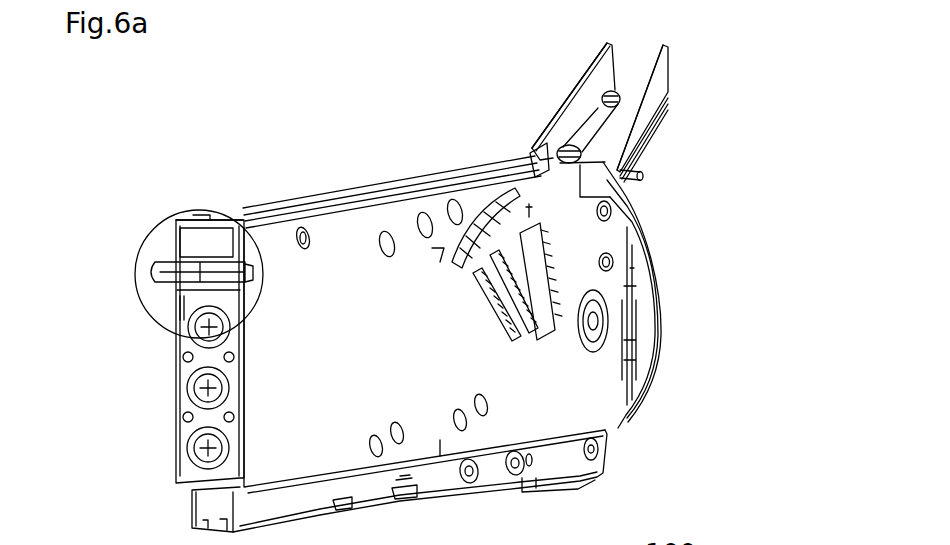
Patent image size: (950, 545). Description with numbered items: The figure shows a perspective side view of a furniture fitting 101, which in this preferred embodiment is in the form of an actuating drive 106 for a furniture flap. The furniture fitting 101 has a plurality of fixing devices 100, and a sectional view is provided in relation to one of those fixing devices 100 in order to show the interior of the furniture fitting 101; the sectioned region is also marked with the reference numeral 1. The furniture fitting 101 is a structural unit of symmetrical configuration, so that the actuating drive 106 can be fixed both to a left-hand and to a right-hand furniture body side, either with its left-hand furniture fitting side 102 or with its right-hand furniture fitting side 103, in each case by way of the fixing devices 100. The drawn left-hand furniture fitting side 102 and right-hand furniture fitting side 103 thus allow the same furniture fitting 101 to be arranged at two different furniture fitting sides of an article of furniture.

The fastening element (screw/bolt) 1 is at (172, 272).
The fixing device 100 is at (290, 224).
The furniture fitting 101 is at (397, 296).
The actuating drive 106 is at (397, 296).
The left-hand furniture fitting side 102 is at (426, 378).
The right-hand furniture fitting side 103 is at (172, 367).